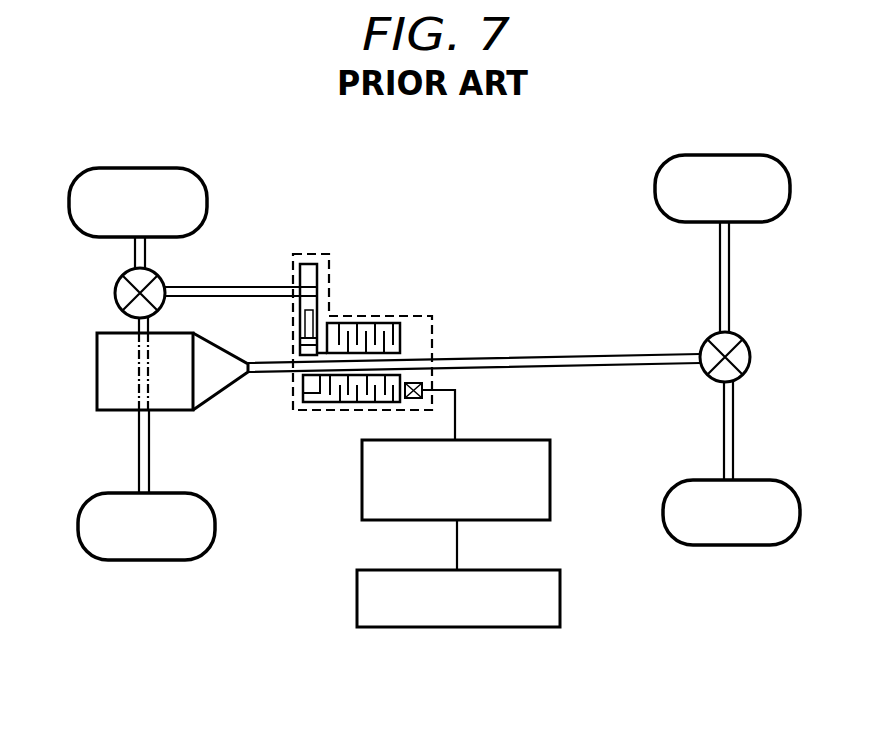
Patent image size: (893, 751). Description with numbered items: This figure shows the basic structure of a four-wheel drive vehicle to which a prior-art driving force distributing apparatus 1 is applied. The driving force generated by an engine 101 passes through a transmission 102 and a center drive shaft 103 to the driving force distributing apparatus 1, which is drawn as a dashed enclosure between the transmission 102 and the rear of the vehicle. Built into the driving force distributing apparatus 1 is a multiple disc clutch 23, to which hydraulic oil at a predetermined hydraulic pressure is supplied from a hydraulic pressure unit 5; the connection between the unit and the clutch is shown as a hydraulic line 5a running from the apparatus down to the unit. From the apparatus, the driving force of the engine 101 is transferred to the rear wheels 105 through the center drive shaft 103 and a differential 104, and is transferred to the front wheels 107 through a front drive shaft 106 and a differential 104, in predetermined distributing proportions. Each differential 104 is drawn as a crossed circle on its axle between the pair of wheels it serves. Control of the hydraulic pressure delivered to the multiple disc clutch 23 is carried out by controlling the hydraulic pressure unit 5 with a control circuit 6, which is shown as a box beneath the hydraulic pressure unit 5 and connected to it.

The driving force distributing apparatus 1 is at (390, 318).
The multiple disc clutch 23 is at (402, 338).
The hydraulic pressure unit 5 is at (550, 505).
The hydraulic line 5a is at (460, 422).
The control circuit 6 is at (560, 602).
The engine 101 is at (97, 360).
The transmission 102 is at (223, 393).
The center drive shaft 103 is at (596, 374).
The differential 104 is at (115, 297).
The rear wheels 105 is at (743, 153).
The front drive shaft 106 is at (243, 283).
The front wheels 107 is at (112, 168).